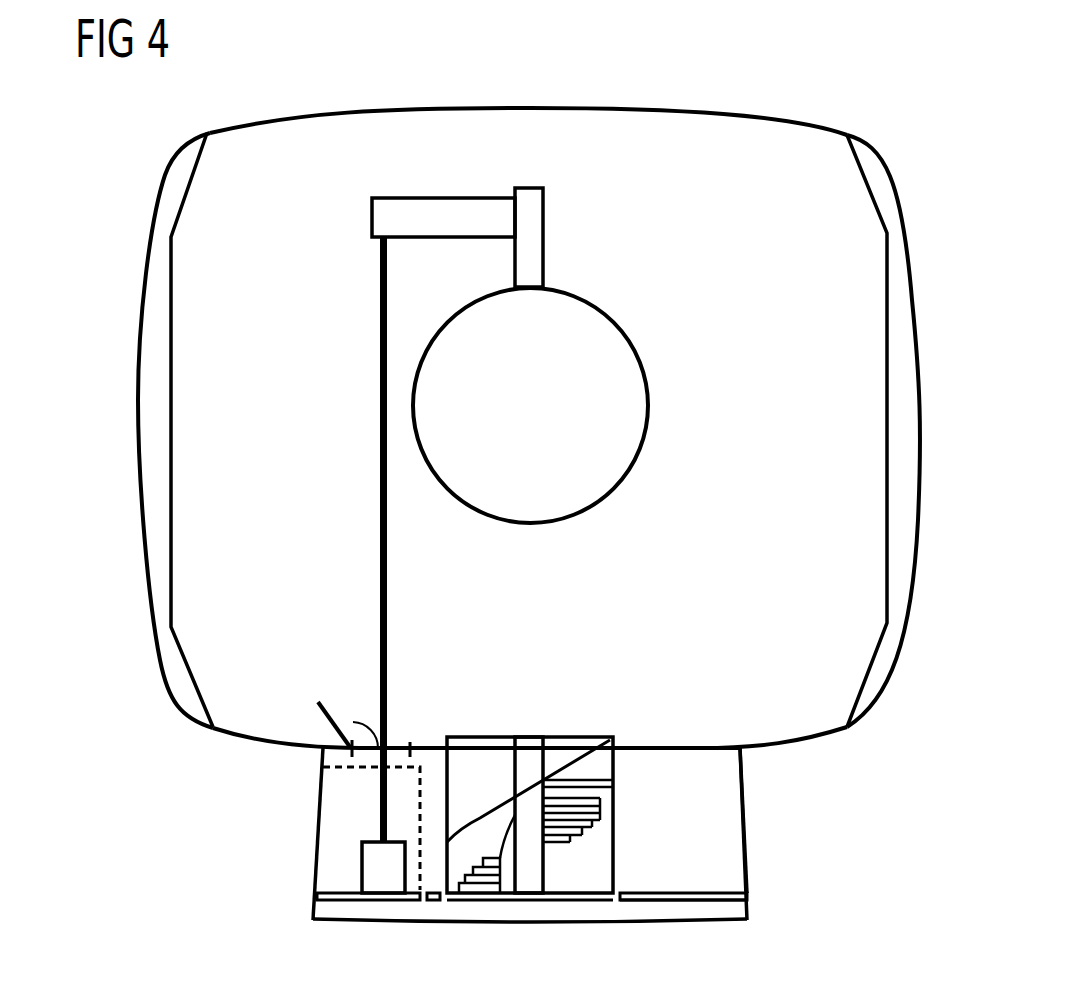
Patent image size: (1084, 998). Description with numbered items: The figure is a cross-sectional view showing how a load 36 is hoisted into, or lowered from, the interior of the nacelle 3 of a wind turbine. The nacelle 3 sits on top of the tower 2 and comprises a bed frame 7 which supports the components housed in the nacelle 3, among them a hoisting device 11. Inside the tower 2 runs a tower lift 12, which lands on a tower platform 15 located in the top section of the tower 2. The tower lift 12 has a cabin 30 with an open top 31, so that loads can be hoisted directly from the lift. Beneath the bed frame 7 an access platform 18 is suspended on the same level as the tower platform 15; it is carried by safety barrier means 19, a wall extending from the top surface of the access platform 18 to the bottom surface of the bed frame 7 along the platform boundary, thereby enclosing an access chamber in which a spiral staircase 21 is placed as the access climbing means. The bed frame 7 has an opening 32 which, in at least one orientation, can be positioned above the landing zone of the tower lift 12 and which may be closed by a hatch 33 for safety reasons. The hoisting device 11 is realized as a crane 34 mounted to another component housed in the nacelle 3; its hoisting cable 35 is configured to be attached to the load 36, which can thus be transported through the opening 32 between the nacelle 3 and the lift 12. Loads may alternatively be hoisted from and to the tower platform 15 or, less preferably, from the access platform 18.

The tower 2 is at (750, 907).
The nacelle 3 is at (692, 108).
The bed frame 7 is at (798, 742).
The hoisting device 11 is at (485, 176).
The tower lift 12 is at (311, 831).
The tower platform 15 is at (700, 900).
The access platform 18 is at (572, 893).
The safety barrier means 19 is at (617, 835).
The spiral staircase 21 is at (587, 822).
The cabin 30 is at (433, 900).
The open top 31 is at (323, 767).
The opening 32 is at (398, 738).
The hatch 33 is at (357, 728).
The crane 34 is at (448, 198).
The hoisting cable 35 is at (380, 405).
The load 36 is at (362, 870).